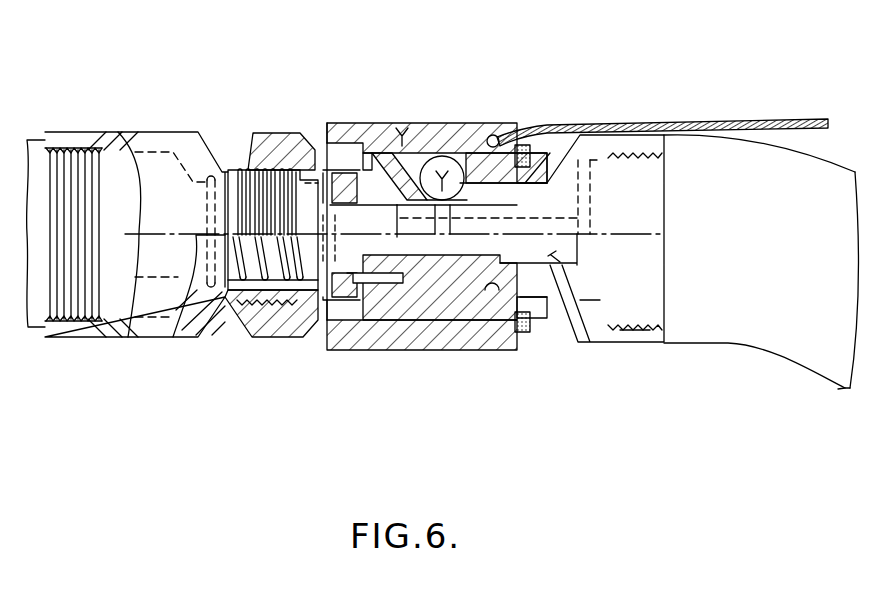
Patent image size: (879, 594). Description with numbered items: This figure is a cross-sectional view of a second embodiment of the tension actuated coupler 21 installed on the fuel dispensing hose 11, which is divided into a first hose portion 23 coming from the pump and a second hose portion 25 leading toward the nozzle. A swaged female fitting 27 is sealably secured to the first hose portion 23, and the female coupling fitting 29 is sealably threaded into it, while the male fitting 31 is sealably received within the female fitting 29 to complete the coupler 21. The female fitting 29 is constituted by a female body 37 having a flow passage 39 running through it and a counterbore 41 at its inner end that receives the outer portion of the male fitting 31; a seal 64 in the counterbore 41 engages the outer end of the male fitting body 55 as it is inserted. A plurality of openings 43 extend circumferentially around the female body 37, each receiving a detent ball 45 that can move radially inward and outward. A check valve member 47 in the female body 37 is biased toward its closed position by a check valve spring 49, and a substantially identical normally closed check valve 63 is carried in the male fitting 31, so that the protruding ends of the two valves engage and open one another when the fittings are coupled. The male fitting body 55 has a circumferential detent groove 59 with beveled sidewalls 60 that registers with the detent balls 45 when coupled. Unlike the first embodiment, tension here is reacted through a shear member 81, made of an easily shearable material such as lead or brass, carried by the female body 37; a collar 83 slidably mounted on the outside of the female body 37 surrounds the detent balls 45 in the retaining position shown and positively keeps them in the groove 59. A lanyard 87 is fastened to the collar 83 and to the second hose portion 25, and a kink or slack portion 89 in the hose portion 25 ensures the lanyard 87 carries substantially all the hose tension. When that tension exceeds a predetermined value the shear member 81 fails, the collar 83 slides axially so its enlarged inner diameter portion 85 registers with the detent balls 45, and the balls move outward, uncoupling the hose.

The fuel dispensing hose 11 is at (789, 366).
The coupler 21 is at (444, 64).
The first hose portion 23 is at (36, 140).
The second hose portion 25 is at (792, 150).
The swaged female fitting 27 is at (652, 342).
The female coupling fitting 29 is at (252, 352).
The male fitting 31 is at (568, 343).
The female body 37 is at (392, 183).
The flow passage 39 is at (377, 183).
The counterbore 41 is at (493, 300).
The openings 43 is at (434, 128).
The detent ball 45 is at (473, 127).
The check valve member 47 is at (312, 175).
The check valve spring 49 is at (216, 302).
The male fitting body 55 is at (538, 272).
The circumferential detent groove 59 is at (444, 236).
The beveled sidewalls 60 is at (428, 236).
The check valve 63 is at (603, 343).
The seal 64 is at (330, 337).
The shear member 81 is at (552, 130).
The collar 83 is at (466, 150).
The enlarged inner diameter portion 85 is at (408, 153).
The lanyard 87 is at (718, 122).
The slack portion 89 is at (838, 390).